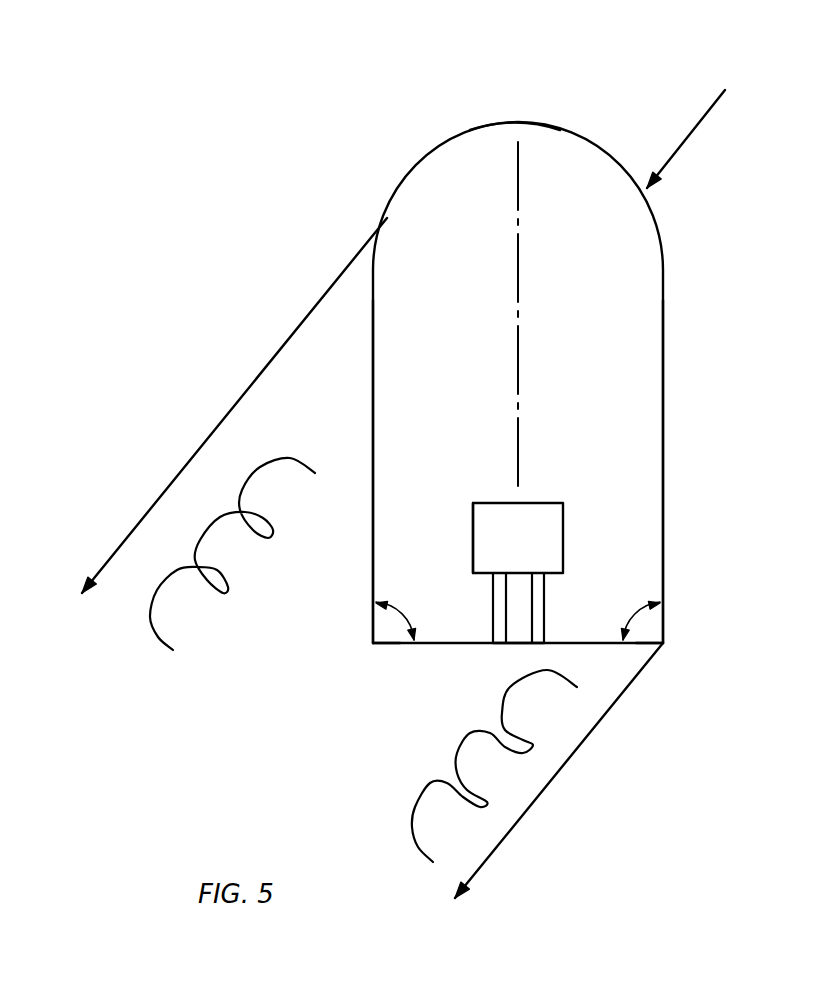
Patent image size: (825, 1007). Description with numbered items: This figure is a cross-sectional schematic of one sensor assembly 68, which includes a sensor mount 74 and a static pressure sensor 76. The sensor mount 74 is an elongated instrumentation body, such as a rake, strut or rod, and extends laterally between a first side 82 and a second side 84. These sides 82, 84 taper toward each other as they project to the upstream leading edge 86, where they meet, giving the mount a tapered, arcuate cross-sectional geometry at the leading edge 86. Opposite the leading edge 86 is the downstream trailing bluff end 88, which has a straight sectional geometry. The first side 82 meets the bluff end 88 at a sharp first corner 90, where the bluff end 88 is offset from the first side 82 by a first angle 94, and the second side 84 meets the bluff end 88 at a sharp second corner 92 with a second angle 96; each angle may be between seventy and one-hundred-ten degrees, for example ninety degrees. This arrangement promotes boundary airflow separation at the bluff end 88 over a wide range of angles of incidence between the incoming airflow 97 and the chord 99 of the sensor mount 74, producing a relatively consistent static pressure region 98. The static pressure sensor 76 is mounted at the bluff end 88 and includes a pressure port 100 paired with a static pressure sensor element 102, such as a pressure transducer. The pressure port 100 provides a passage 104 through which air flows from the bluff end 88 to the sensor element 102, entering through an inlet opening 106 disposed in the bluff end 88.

The sensor assembly 68 is at (307, 128).
The sensor mount 74 is at (667, 314).
The static pressure sensor 76 is at (570, 510).
The first side 82 is at (373, 390).
The second side 84 is at (665, 388).
The leading edge 86 is at (512, 122).
The bluff end 88 is at (595, 643).
The first corner 90 is at (373, 643).
The second corner 92 is at (664, 643).
The first angle 94 is at (400, 620).
The second angle 96 is at (640, 624).
The incoming airflow 97 is at (687, 133).
The static pressure region 98 is at (307, 737).
The chord 99 is at (522, 227).
The pressure port 100 is at (490, 606).
The static pressure sensor element 102 is at (473, 523).
The passage 104 is at (523, 606).
The inlet opening 106 is at (513, 643).